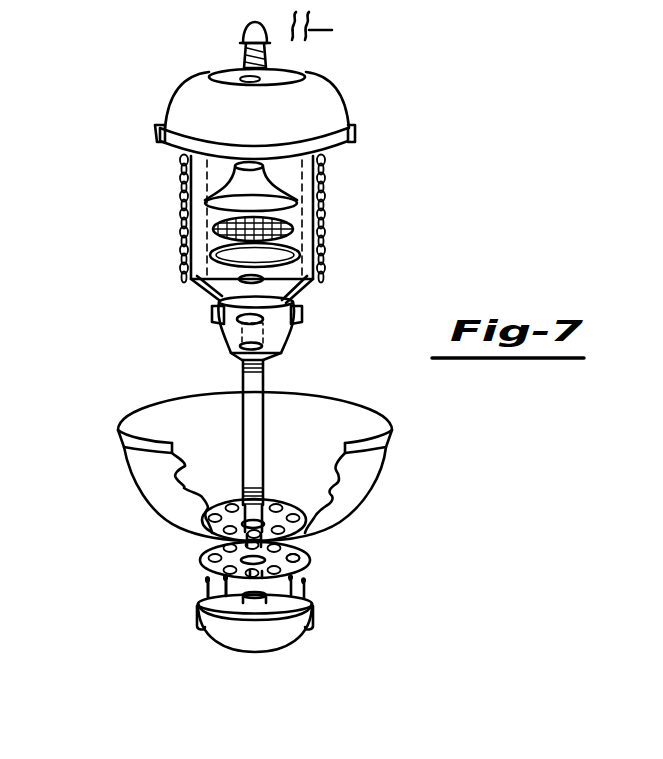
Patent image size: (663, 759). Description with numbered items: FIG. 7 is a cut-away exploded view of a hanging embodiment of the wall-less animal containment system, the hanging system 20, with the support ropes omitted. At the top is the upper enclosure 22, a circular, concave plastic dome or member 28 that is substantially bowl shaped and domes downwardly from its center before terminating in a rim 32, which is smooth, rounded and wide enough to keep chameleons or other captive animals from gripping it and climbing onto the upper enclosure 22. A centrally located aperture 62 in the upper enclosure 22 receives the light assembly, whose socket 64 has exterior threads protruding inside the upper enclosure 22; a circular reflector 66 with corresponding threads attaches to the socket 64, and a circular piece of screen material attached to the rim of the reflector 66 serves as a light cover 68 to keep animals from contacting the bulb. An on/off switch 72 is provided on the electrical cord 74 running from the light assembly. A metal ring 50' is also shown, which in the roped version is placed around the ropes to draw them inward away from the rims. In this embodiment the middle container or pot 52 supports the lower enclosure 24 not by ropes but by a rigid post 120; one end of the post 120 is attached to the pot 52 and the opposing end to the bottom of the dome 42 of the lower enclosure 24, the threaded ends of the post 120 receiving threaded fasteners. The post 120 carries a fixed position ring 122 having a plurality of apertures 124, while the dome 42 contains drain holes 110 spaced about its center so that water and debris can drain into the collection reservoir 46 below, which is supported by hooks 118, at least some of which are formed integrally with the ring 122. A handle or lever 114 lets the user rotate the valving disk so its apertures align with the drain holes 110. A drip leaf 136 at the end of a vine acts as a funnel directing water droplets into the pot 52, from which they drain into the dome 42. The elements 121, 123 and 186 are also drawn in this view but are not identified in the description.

The hanging system 20 is at (425, 97).
The upper enclosure 22 is at (321, 113).
The lower enclosure 24 is at (388, 458).
The dome 28 is at (341, 106).
The rim 32 is at (158, 146).
The dome 42 is at (123, 462).
The collection reservoir 46 is at (228, 640).
The metal ring 50' is at (296, 219).
The middle container 52 is at (283, 342).
The aperture 62 is at (212, 72).
The socket 64 is at (270, 58).
The circular reflector 66 is at (275, 184).
The light cover 68 is at (302, 225).
The on/off switch 72 is at (243, 28).
The electrical cord 74 is at (340, 8).
The drain holes 110 is at (200, 500).
The handle 114 is at (207, 549).
The hooks 118 is at (206, 586).
The rigid post 120 is at (243, 417).
The tabs 121 is at (292, 333).
The fixed position ring 122 is at (200, 563).
The hole 123 is at (318, 548).
The apertures 124 is at (312, 563).
The drip leaf 136 is at (180, 284).
The chain 186 is at (180, 182).